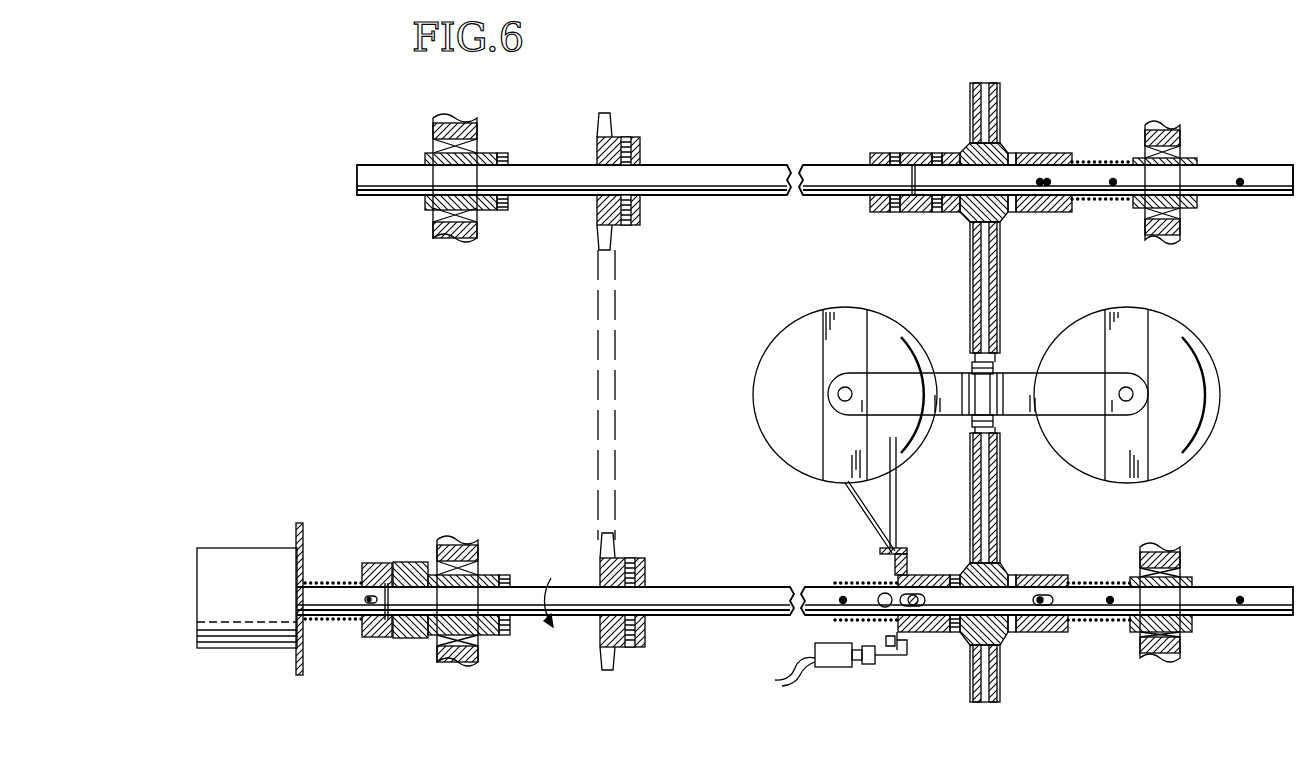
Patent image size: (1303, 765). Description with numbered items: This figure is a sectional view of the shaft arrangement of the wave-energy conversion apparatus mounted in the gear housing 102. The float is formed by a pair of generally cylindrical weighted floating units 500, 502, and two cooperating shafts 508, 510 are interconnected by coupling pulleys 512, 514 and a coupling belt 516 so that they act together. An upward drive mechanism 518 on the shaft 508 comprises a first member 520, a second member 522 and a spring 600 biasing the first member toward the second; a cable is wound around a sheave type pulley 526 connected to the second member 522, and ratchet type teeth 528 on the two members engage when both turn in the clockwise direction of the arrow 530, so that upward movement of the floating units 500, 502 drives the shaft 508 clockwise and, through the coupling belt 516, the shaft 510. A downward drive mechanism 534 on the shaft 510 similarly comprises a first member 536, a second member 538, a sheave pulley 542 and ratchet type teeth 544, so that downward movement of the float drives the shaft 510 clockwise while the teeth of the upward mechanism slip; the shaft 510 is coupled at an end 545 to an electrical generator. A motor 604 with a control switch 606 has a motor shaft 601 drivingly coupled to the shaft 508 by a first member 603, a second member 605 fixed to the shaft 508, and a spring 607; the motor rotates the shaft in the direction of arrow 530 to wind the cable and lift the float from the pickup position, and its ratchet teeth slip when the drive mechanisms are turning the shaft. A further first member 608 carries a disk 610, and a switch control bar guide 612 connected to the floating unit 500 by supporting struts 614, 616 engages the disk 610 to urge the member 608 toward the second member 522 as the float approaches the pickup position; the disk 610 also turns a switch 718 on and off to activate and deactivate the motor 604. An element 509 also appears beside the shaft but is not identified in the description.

The gear housing 102 is at (1103, 160).
The floating unit 500 is at (826, 308).
The floating unit 502 is at (1152, 308).
The shaft 508 is at (583, 616).
The spring 509 is at (838, 624).
The shaft 510 is at (827, 165).
The coupling pulley 512 is at (646, 646).
The coupling pulley 514 is at (630, 140).
The coupling belt 516 is at (617, 290).
The upward drive mechanism 518 is at (1022, 663).
The first member 520 is at (1060, 633).
The second member 522 is at (1004, 575).
The sheave type pulley 526 is at (1002, 506).
The ratchet type teeth 528 is at (1040, 575).
The arrow 530 is at (551, 578).
The downward drive mechanism 534 is at (937, 90).
The first member 536 is at (1050, 214).
The second member 538 is at (947, 214).
The sheave pulley 542 is at (1002, 94).
The ratchet type teeth 544 is at (1010, 157).
The end 545 is at (1273, 165).
The spring 600 is at (1118, 624).
The motor shaft 601 is at (348, 623).
The first member 603 is at (370, 638).
The motor 604 is at (250, 548).
The second member 605 is at (415, 562).
The control switch 606 is at (822, 548).
The spring 607 is at (348, 582).
The first member 608 is at (940, 636).
The disk 610 is at (895, 557).
The switch control bar guide 612 is at (907, 552).
The supporting strut 614 is at (898, 503).
The supporting strut 616 is at (868, 525).
The switch 718 is at (836, 668).